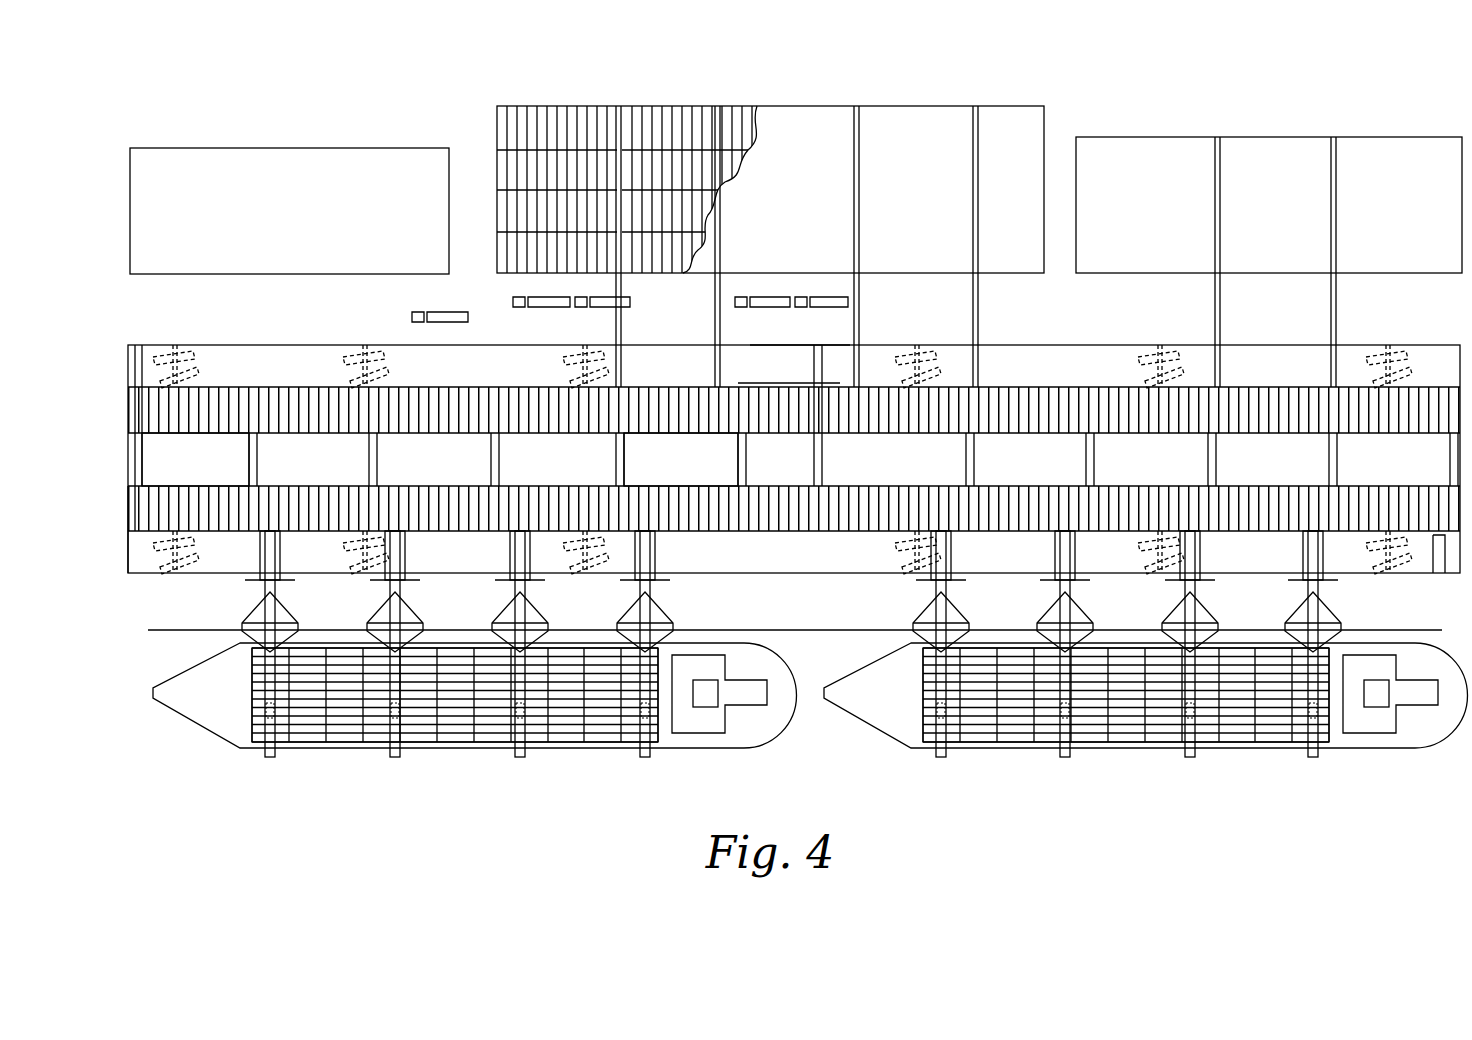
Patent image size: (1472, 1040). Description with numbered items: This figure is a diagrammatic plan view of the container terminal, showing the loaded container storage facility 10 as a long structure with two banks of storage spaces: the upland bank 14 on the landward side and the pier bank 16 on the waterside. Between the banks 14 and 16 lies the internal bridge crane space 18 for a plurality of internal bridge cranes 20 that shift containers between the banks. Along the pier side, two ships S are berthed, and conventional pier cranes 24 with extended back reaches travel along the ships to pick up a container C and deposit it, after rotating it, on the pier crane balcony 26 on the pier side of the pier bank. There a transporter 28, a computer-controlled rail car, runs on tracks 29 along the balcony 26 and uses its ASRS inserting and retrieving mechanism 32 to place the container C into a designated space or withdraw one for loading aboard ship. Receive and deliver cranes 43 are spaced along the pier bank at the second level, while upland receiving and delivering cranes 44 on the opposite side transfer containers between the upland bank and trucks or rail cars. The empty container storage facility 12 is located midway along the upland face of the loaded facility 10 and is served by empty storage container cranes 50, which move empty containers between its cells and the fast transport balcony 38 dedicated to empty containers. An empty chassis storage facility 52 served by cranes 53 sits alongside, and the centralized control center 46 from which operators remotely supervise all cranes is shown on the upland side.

The loaded container storage facility 10 is at (323, 330).
The empty container storage facility 12 is at (492, 112).
The upland bank of loaded storage spaces 14 is at (127, 437).
The pier bank of loaded storage spaces 16 is at (128, 505).
The internal bridge crane space 18 is at (222, 450).
The internal bridge cranes 20 is at (258, 462).
The pier cranes 24 is at (268, 605).
The pier crane balcony 26 is at (776, 555).
The transporter 28 is at (815, 367).
The tracks 29 is at (757, 383).
The ASRS inserting and retrieving mechanism 32 is at (1433, 540).
The fast transport balcony 38 is at (668, 372).
The receive and deliver cranes 43 is at (165, 578).
The upland receiving and delivering cranes 44 is at (178, 340).
The centralized control center 46 is at (289, 211).
The empty storage container cranes 50 is at (973, 238).
The empty chassis storage facility 52 is at (1269, 205).
The cranes 53 is at (1333, 160).
The ships S is at (462, 760).
The container C is at (572, 708).